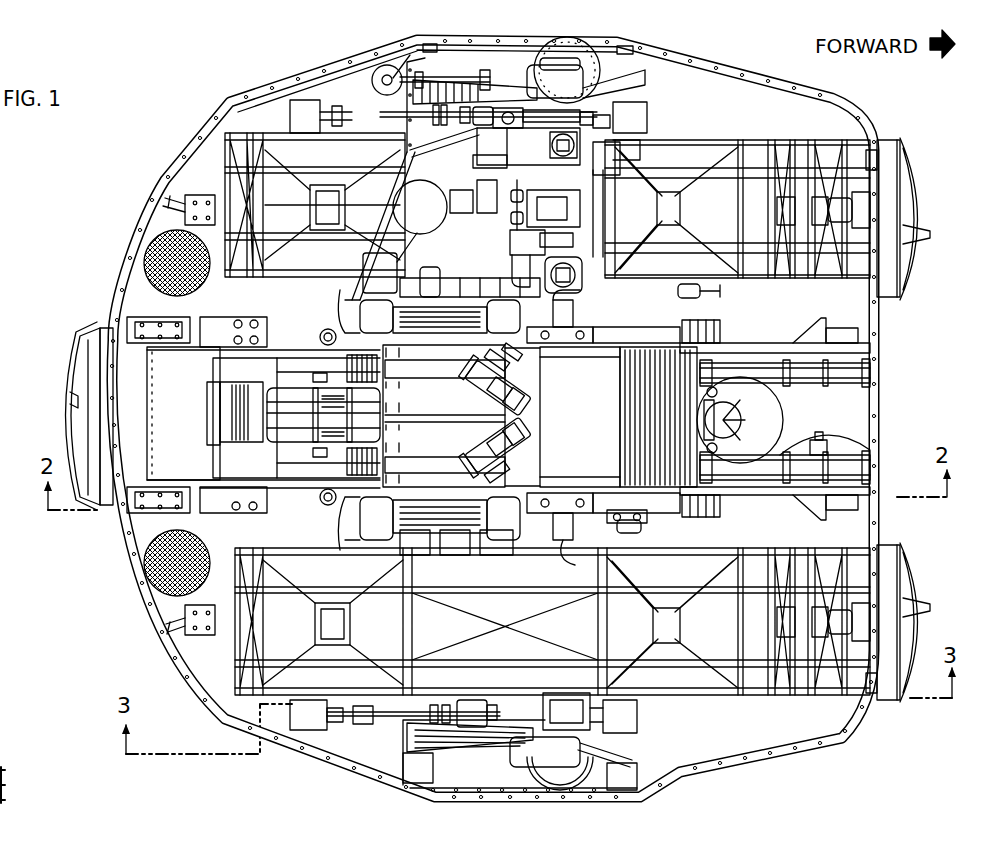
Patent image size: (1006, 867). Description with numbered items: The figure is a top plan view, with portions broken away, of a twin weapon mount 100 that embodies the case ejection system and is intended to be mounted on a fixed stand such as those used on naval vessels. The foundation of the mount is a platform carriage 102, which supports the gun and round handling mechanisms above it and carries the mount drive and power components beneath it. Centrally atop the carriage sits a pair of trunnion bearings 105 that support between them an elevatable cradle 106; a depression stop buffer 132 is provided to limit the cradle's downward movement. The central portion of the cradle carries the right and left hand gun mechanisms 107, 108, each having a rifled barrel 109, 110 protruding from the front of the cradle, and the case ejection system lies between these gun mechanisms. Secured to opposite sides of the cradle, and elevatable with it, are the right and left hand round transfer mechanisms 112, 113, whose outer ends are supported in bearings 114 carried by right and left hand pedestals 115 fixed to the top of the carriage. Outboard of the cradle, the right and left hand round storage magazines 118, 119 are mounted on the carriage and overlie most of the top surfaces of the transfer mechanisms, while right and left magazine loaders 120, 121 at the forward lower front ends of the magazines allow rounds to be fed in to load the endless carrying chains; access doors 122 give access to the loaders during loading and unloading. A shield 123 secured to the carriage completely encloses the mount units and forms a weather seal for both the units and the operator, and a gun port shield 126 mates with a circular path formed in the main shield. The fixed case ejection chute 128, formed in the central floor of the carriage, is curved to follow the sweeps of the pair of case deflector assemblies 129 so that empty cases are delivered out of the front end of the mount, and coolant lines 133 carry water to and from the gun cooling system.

The twin weapon mount 100 is at (150, 153).
The platform carriage 102 is at (137, 383).
The trunnion bearings 105 is at (578, 312).
The elevatable cradle 106 is at (457, 415).
The right hand gun mechanism 107 is at (329, 500).
The left hand gun mechanism 108 is at (360, 354).
The rifled barrel 109 is at (845, 462).
The rifled barrel 110 is at (840, 387).
The right hand round transfer mechanism 112 is at (362, 536).
The left hand round transfer mechanism 113 is at (362, 312).
The bearings 114 is at (640, 116).
The pedestal 115 is at (458, 100).
The right hand round storage magazine 118 is at (690, 578).
The left hand round storage magazine 119 is at (702, 163).
The right magazine loader 120 is at (865, 672).
The left magazine loader 121 is at (862, 172).
The access doors 122 is at (915, 265).
The shield 123 is at (148, 230).
The gun port shield 126 is at (600, 426).
The fixed case ejection chute 128 is at (290, 452).
The case deflector assemblies 129 is at (383, 404).
The depression stop buffer 132 is at (737, 418).
The coolant lines 133 is at (718, 392).